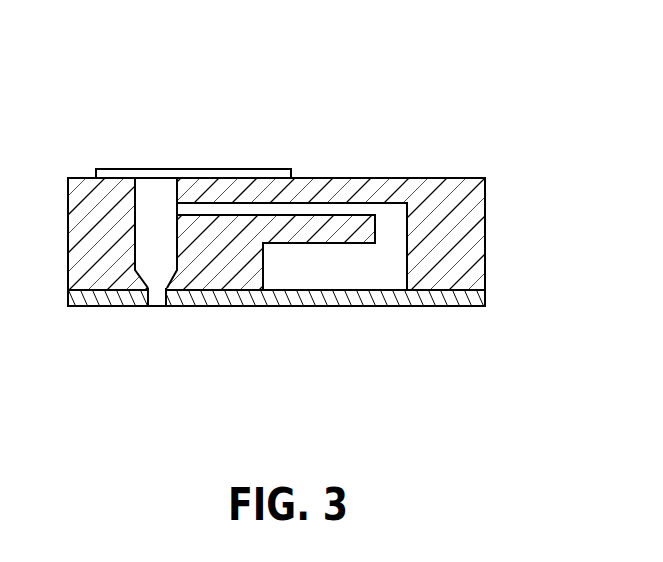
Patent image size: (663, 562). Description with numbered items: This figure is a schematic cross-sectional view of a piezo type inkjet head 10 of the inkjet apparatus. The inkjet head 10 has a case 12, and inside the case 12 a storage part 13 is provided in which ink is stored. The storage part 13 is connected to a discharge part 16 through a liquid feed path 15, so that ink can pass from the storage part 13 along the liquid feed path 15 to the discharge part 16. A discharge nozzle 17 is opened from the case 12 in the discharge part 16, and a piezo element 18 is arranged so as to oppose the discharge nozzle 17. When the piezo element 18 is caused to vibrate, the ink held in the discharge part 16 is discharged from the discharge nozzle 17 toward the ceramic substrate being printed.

The inkjet head 10 is at (490, 96).
The case 12 is at (470, 207).
The storage part 13 is at (338, 263).
The liquid feed path 15 is at (294, 214).
The discharge part 16 is at (153, 234).
The discharge nozzle 17 is at (155, 303).
The piezo element 18 is at (235, 173).